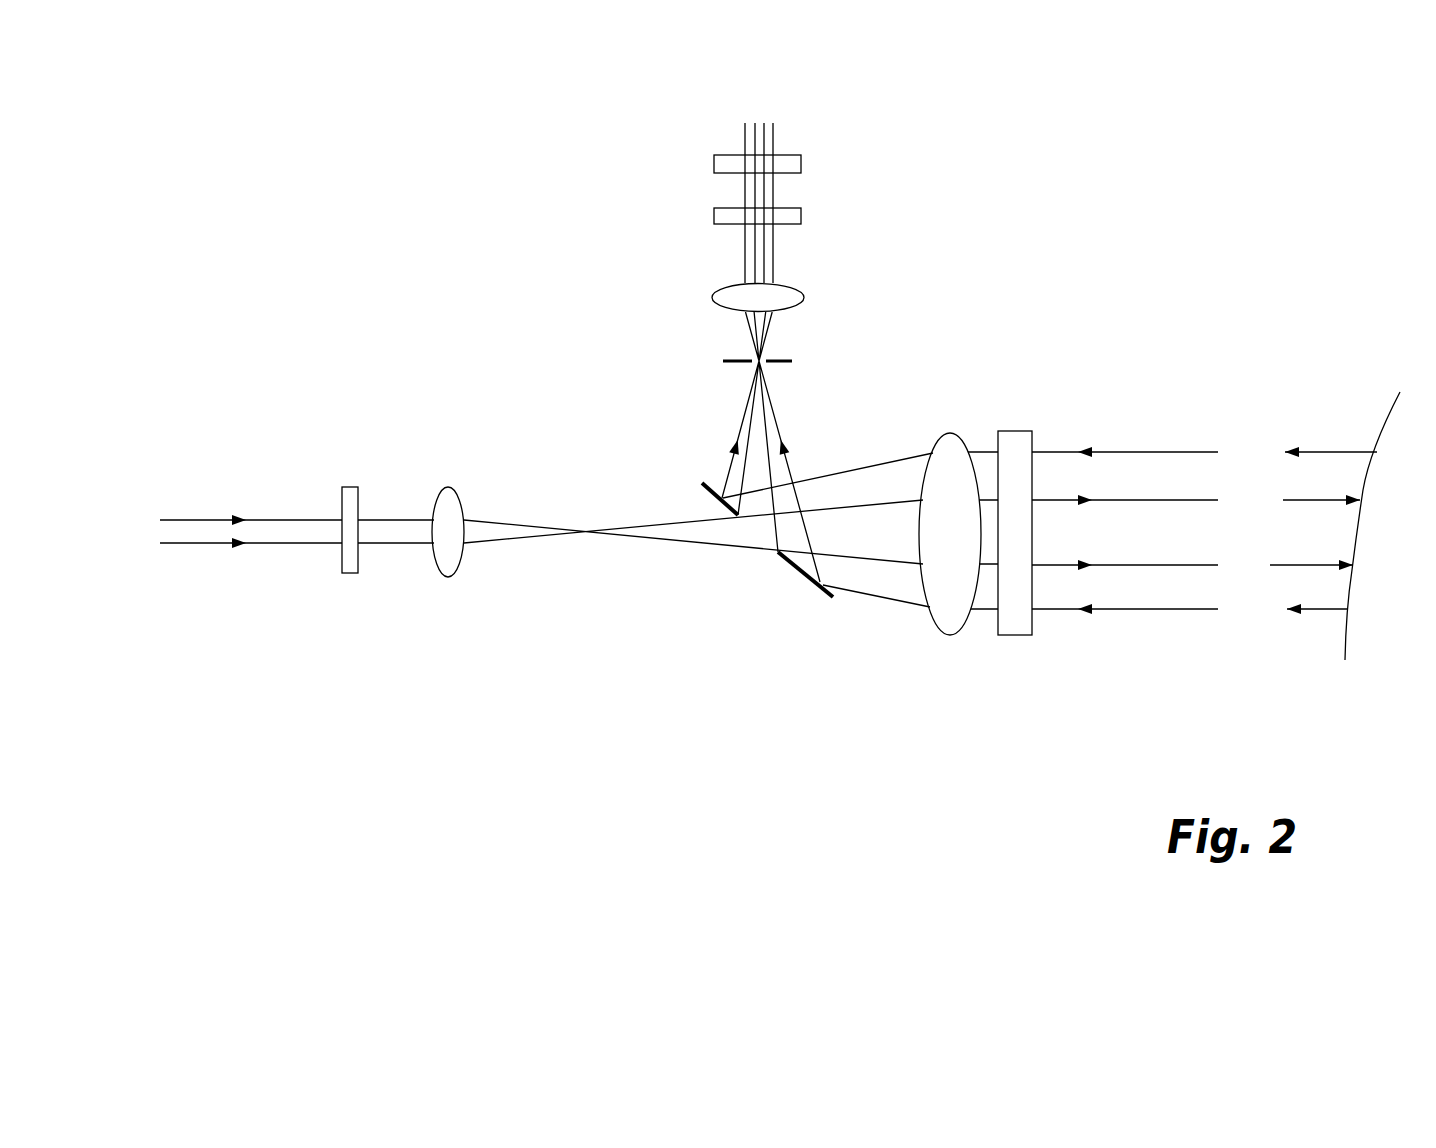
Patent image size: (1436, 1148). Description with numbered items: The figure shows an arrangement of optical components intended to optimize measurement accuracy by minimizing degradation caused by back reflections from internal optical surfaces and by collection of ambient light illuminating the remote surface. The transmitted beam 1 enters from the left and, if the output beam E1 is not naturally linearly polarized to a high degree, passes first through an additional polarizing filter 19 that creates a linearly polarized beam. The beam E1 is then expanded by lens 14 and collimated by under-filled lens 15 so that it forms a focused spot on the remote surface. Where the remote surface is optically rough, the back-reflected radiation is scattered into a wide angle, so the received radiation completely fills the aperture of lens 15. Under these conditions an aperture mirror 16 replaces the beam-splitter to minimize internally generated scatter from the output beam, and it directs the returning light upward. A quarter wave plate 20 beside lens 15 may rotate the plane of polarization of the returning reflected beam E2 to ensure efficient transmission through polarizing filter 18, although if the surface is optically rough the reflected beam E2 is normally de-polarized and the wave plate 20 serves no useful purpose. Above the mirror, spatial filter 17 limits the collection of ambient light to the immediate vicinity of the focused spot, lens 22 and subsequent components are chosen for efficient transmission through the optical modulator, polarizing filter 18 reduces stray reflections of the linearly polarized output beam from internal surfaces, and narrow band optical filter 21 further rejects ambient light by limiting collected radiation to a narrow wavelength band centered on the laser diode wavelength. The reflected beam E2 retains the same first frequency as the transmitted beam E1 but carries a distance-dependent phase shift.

The transmitted beam 1 is at (288, 543).
The lens 14 is at (446, 578).
The under-filled lens 15 is at (948, 637).
The aperture mirror 16 is at (832, 600).
The spatial filter 17 is at (723, 362).
The polarizing filter 18 is at (713, 215).
The polarizing filter 19 is at (352, 486).
The quarter wave plate 20 is at (1013, 636).
The narrow band optical filter 21 is at (802, 161).
The lens 22 is at (803, 292).
The transmitted beam E1 is at (1155, 505).
The reflected beam E2 is at (1168, 451).